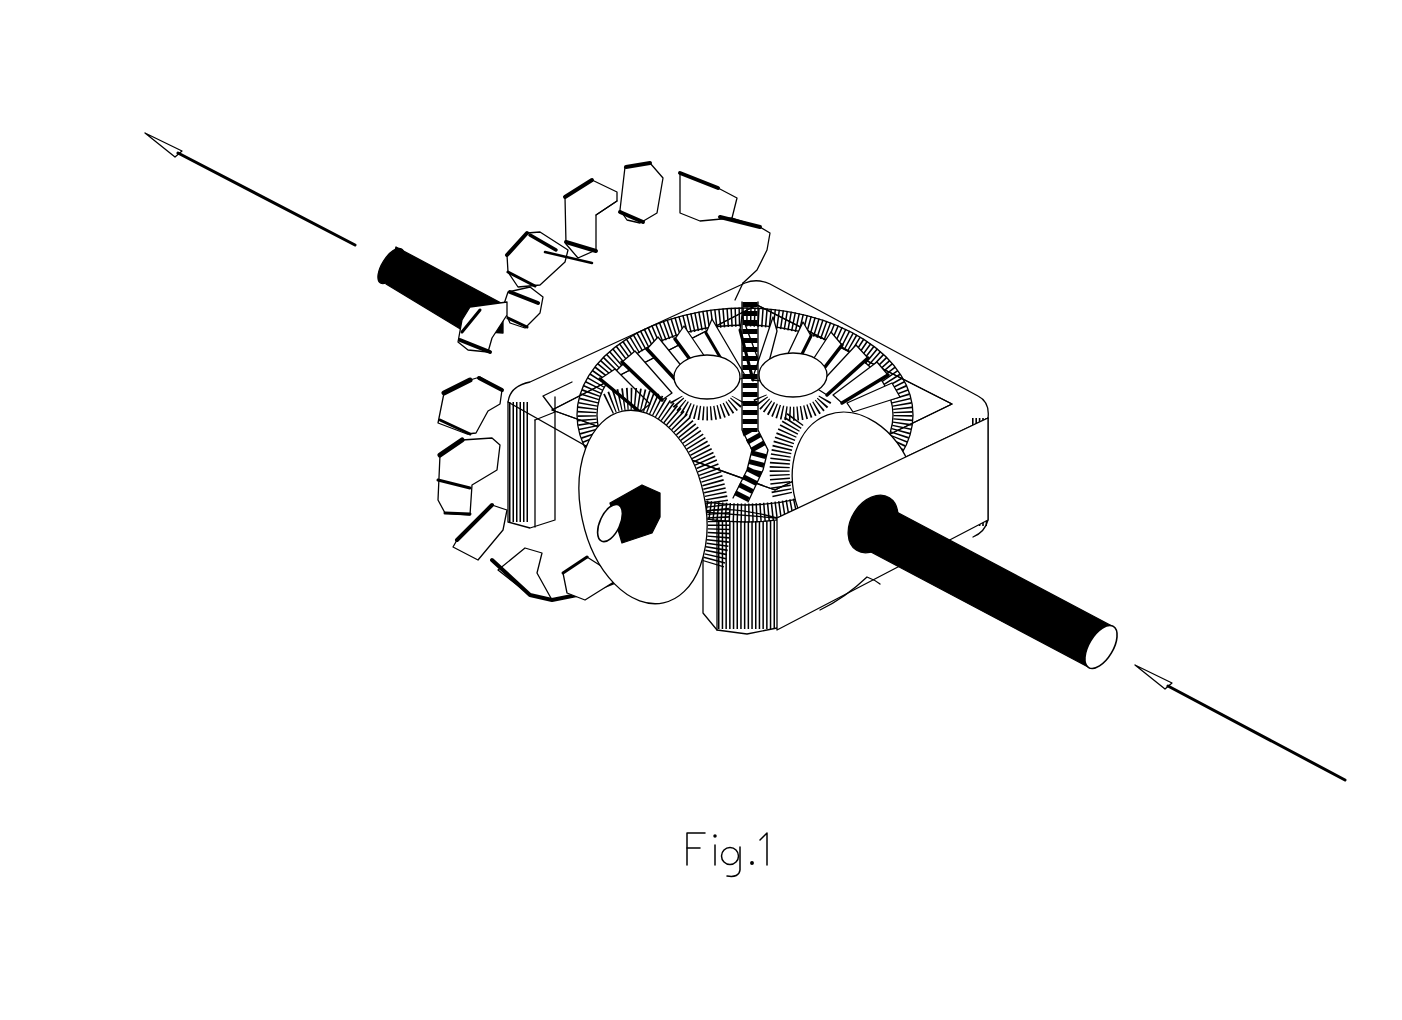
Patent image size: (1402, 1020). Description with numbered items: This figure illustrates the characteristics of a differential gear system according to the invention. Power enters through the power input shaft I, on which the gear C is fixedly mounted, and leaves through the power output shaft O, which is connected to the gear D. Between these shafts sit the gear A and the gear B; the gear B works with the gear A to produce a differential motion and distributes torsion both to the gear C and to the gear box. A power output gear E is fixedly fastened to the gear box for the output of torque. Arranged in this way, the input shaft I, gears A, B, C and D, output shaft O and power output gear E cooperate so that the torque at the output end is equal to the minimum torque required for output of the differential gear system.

The power output shaft O is at (228, 171).
The power input shaft I is at (1106, 652).
The gear A is at (633, 593).
The gear B is at (848, 312).
The gear C is at (913, 400).
The gear D is at (653, 312).
The power output gear E is at (447, 492).